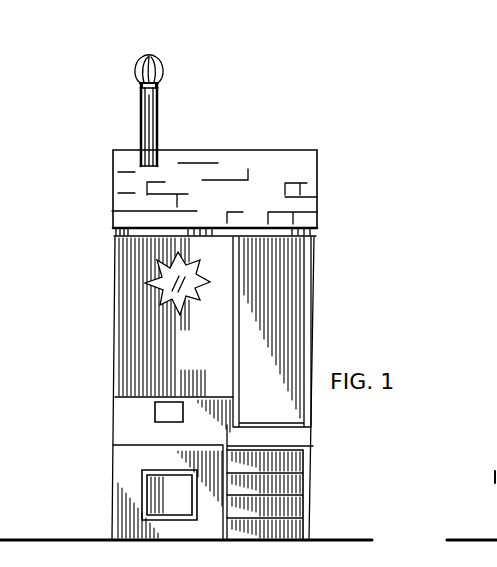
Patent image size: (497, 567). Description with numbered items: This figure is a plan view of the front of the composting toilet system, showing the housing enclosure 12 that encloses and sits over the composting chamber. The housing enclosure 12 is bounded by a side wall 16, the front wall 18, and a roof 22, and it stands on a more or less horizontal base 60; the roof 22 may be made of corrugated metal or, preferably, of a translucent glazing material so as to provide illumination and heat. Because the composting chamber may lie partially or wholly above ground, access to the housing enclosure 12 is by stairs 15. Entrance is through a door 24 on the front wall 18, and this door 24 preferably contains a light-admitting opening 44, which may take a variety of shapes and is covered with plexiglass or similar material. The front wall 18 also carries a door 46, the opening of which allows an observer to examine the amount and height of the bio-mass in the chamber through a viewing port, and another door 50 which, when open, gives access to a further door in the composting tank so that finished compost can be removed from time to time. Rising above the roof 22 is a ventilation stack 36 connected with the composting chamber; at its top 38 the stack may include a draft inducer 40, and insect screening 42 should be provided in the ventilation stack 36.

The housing enclosure 12 is at (323, 313).
The stairs 15 is at (283, 508).
The side wall 16 is at (304, 478).
The front wall 18 is at (142, 334).
The roof 22 is at (242, 168).
The door 24 is at (272, 375).
The ventilation stack 36 is at (139, 117).
The top of ventilation stack 38 is at (164, 80).
The draft inducer 40 is at (150, 54).
The insect screening 42 is at (160, 113).
The light-admitting opening 44 is at (165, 279).
The door 46 is at (165, 410).
The door 50 is at (143, 483).
The base 60 is at (131, 543).